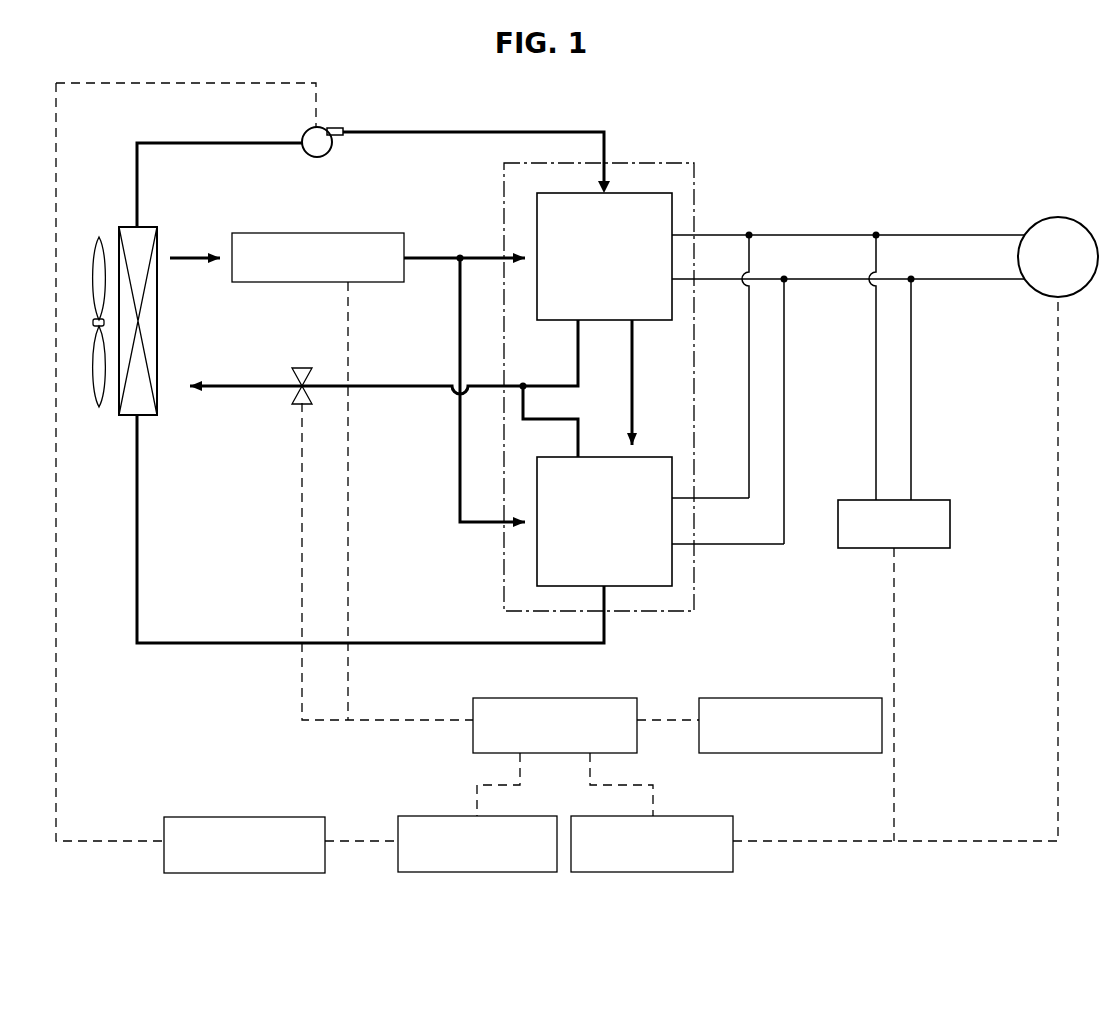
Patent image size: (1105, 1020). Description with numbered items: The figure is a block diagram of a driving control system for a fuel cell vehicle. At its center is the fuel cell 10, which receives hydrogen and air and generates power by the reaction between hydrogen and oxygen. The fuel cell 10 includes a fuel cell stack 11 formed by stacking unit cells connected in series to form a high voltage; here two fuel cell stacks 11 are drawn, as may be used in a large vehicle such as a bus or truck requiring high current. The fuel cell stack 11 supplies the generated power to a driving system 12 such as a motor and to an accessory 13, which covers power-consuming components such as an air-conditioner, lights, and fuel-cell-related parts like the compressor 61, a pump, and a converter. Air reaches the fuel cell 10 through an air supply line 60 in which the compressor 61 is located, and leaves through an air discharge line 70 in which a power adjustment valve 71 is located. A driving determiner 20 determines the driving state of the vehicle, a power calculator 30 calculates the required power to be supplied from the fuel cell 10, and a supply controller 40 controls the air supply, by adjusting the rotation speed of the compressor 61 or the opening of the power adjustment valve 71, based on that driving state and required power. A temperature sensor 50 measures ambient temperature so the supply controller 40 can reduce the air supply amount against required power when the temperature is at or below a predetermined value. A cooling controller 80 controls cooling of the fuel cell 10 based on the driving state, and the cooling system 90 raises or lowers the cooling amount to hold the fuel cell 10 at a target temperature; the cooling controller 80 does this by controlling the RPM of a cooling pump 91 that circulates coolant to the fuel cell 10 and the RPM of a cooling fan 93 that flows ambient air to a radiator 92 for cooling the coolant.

The fuel cell 10 is at (672, 163).
The fuel cell stack 11 is at (672, 207).
The driving system 12 is at (1060, 217).
The accessory 13 is at (950, 528).
The driving determiner 20 is at (462, 872).
The power calculator 30 is at (660, 872).
The supply controller 40 is at (626, 697).
The temperature sensor 50 is at (810, 697).
The air supply line 60 is at (432, 256).
The compressor 61 is at (365, 233).
The air discharge line 70 is at (404, 390).
The power adjustment valve 71 is at (300, 368).
The cooling controller 80 is at (232, 873).
The cooling system 90 is at (175, 645).
The cooling pump 91 is at (305, 133).
The radiator 92 is at (155, 415).
The cooling fan 93 is at (100, 407).